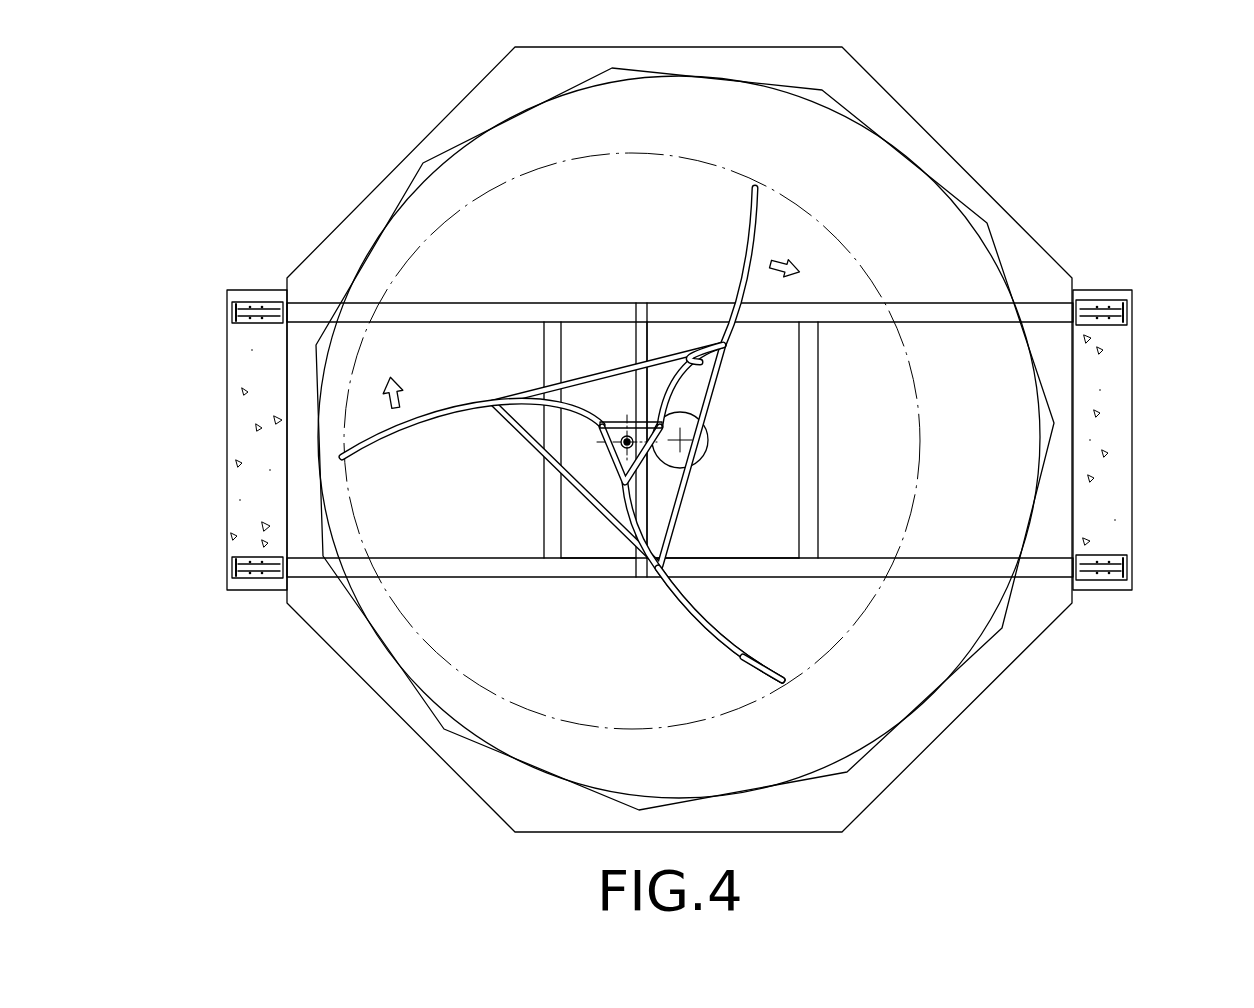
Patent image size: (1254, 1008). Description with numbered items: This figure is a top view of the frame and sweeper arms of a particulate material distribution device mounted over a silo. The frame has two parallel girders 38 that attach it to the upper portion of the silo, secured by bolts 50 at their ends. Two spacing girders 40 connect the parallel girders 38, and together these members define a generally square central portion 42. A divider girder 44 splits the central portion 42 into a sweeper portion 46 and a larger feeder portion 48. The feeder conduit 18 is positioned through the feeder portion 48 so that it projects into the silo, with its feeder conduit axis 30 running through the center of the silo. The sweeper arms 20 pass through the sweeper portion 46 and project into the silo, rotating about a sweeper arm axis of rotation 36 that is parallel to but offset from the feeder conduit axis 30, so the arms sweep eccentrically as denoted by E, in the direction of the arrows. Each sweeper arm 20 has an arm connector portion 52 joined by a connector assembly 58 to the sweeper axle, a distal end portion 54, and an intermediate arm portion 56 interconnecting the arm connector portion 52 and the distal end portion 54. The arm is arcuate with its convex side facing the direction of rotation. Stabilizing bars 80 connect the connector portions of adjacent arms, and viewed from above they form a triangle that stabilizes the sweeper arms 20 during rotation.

The feeder conduit 18 is at (710, 442).
The sweeper arm 20 is at (743, 668).
The feeder conduit axis 30 is at (688, 410).
The sweeper arm axis of rotation 36 is at (625, 428).
The parallel girders 38 is at (1043, 312).
The spacing girders 40 is at (545, 360).
The central portion 42 is at (685, 337).
The divider girder 44 is at (642, 340).
The sweeper portion 46 is at (598, 537).
The feeder portion 48 is at (755, 537).
The bolts 50 is at (1113, 302).
The arm connector portion 52 is at (622, 482).
The distal end portion 54 is at (768, 680).
The intermediate arm portion 56 is at (700, 613).
The connector assembly 58 is at (708, 368).
The stabilizing bar 80 is at (622, 372).
The eccentric rotation E is at (865, 265).